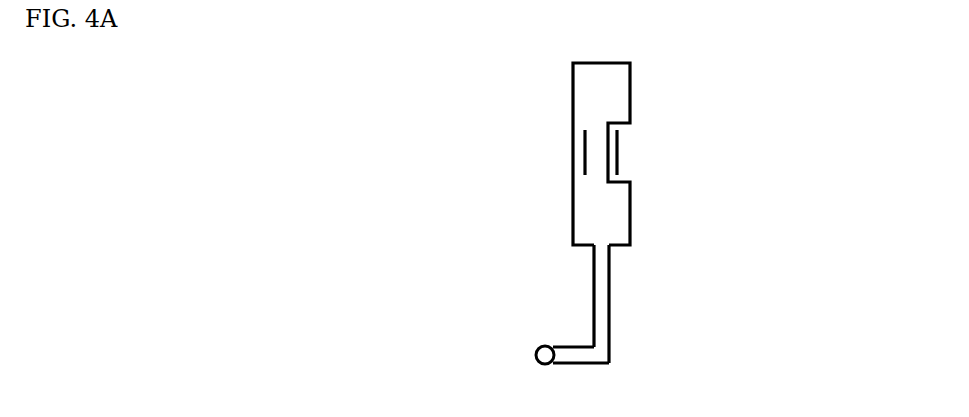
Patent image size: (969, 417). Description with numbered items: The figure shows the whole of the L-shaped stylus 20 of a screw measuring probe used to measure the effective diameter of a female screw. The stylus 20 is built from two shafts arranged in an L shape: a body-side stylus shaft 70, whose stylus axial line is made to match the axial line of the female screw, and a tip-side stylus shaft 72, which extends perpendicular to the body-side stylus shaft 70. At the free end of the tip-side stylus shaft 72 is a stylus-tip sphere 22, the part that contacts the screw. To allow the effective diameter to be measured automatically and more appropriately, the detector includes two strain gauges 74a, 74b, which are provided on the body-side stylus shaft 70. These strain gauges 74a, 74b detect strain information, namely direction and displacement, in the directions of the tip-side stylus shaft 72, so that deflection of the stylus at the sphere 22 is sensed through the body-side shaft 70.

The L-shaped stylus 20 is at (674, 231).
The stylus-tip sphere 22 is at (536, 351).
The body-side stylus shaft 70 is at (609, 300).
The tip-side stylus shaft 72 is at (572, 358).
The strain gauge 74a is at (583, 162).
The strain gauge 74b is at (620, 160).